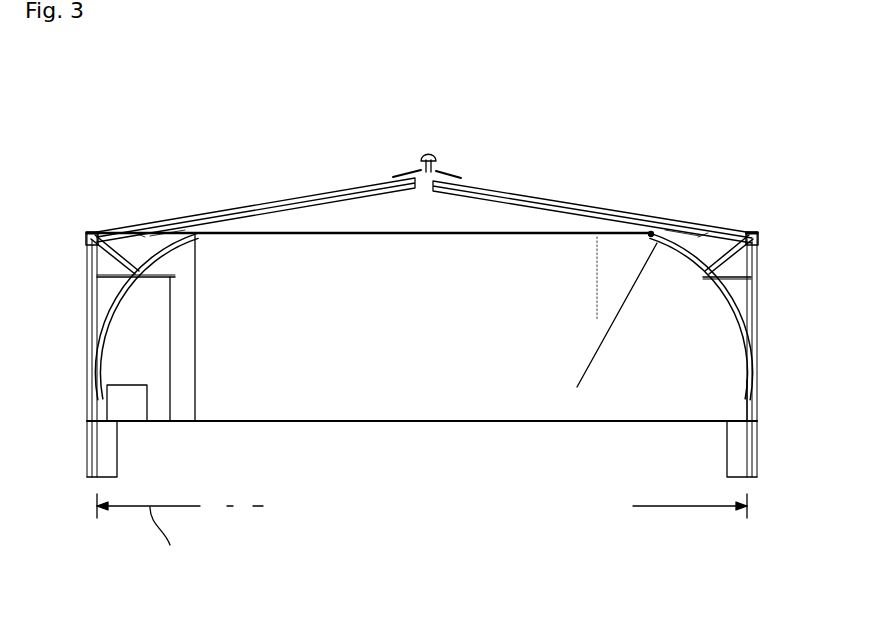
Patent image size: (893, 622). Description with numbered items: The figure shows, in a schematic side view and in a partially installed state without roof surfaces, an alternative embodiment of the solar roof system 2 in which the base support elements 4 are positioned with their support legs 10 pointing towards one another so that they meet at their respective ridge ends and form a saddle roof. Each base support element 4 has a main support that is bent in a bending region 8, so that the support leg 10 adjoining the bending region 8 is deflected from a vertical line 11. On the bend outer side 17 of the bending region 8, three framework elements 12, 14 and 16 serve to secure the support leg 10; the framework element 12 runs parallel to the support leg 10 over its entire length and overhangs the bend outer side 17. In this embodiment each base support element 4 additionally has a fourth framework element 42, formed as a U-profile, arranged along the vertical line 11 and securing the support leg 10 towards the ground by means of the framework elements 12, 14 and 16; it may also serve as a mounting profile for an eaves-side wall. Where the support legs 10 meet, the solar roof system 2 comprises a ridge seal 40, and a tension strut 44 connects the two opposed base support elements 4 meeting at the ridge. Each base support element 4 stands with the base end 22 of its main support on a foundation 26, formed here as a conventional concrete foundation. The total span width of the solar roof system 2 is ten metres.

The solar roof system 2 is at (293, 118).
The base support element 4 is at (237, 309).
The bending region 8 is at (183, 307).
The support leg 10 is at (338, 205).
The vertical line 11 is at (97, 232).
The framework element 12 is at (173, 222).
The framework element 14 is at (128, 252).
The framework element 16 is at (113, 282).
The bend outer side 17 is at (140, 233).
The base end 22 is at (117, 407).
The foundation 26 is at (117, 447).
The ridge seal 40 is at (443, 172).
The fourth framework element 42 is at (87, 247).
The tension strut 44 is at (397, 233).